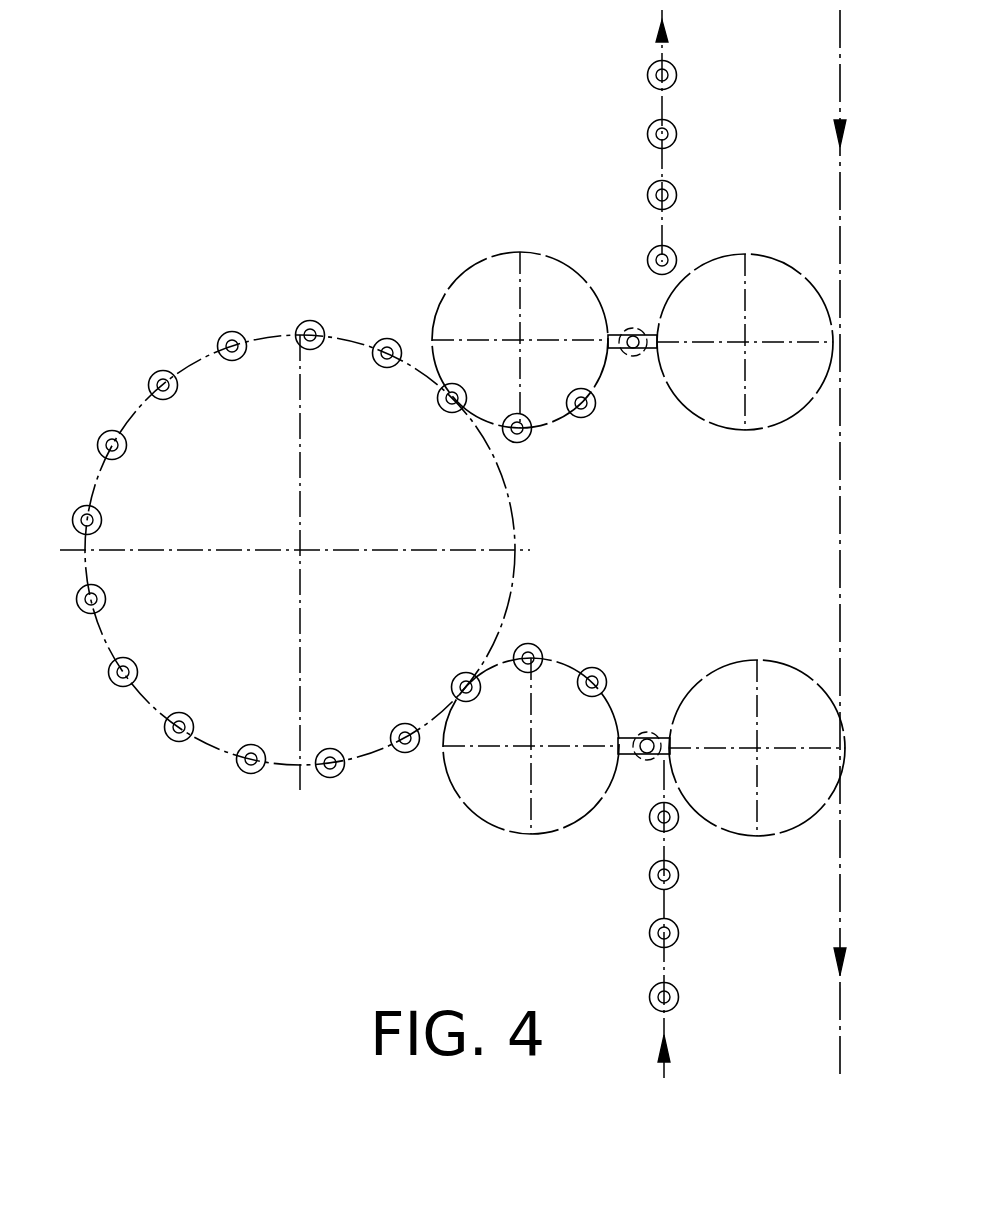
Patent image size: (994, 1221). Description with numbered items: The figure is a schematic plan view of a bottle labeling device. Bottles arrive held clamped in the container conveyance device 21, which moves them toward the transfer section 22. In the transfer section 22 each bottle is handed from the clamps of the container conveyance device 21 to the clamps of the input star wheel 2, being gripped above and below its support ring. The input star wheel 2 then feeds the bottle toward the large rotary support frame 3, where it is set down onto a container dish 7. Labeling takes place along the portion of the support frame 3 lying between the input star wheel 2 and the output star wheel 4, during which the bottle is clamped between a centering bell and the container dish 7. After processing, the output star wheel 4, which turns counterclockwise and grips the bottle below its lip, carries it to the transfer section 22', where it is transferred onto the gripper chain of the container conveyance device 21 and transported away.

The input star wheel 2 is at (445, 828).
The support frame 3 is at (201, 806).
The output star wheel 4 is at (463, 234).
The container dish 7 is at (583, 418).
The container conveyance device 21 is at (875, 206).
The transfer section 22 is at (661, 667).
The transfer section 22' is at (601, 233).